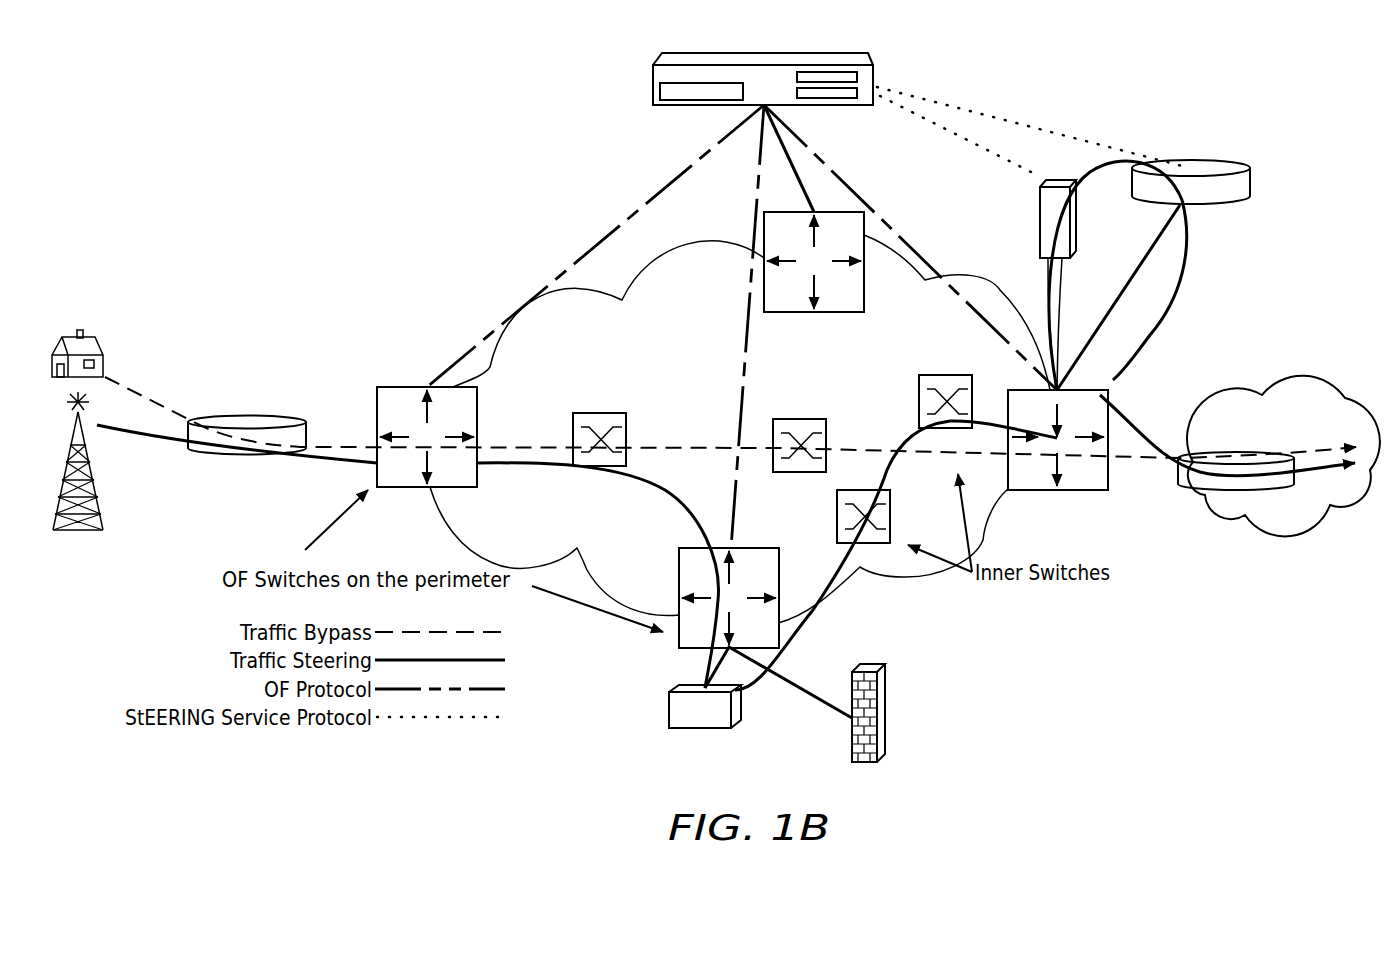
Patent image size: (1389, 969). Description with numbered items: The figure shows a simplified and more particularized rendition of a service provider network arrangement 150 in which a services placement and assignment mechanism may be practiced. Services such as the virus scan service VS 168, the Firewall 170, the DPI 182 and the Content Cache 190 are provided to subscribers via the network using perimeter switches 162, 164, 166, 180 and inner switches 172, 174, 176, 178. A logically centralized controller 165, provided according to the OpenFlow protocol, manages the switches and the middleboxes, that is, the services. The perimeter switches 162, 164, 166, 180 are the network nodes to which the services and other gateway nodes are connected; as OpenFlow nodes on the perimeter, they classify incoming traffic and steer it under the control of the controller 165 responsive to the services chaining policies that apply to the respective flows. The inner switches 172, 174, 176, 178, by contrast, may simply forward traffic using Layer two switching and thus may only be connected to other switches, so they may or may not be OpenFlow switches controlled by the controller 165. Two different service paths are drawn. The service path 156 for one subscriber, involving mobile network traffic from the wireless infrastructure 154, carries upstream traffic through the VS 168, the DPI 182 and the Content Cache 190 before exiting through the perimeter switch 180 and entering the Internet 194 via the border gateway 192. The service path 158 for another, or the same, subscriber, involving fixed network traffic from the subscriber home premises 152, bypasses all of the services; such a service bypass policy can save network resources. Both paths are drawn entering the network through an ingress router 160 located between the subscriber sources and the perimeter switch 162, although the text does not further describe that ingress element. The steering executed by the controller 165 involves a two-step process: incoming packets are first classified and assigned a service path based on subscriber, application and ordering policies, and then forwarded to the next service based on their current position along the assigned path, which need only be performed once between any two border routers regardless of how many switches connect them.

The service provider network arrangement 150 is at (1172, 680).
The subscriber home premises 152 is at (103, 342).
The wireless infrastructure 154 is at (98, 495).
The service path 156 is at (127, 435).
The service path 158 is at (162, 400).
The ingress router 160 is at (250, 418).
The perimeter switch 162 is at (408, 386).
The perimeter switch 164 is at (679, 565).
The controller 165 is at (651, 92).
The perimeter switch 166 is at (825, 312).
The VS 168 is at (669, 698).
The Firewall 170 is at (878, 735).
The inner switch 172 is at (872, 543).
The inner switch 174 is at (794, 419).
The inner switch 176 is at (598, 413).
The inner switch 178 is at (945, 375).
The perimeter switch 180 is at (1085, 490).
The DPI 182 is at (1040, 232).
The Content Cache 190 is at (1210, 204).
The border gateway 192 is at (1230, 490).
The Internet 194 is at (1288, 375).